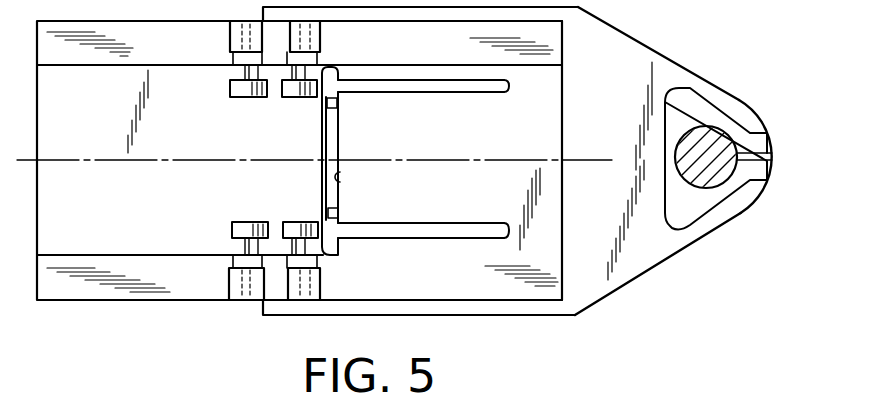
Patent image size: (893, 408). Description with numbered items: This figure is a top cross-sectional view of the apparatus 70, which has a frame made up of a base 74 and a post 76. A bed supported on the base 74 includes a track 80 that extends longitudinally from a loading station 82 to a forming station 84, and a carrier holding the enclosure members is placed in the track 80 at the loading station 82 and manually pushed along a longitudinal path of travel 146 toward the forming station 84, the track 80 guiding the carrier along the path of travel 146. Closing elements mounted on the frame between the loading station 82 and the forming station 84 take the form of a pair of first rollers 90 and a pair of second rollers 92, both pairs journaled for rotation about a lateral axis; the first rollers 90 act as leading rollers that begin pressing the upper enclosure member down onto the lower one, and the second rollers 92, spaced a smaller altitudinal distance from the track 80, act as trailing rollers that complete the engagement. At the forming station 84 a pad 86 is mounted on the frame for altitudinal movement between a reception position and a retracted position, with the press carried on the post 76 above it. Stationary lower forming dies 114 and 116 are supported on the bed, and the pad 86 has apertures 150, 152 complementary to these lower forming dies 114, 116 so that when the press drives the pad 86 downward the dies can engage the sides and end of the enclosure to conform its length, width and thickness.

The apparatus 70 is at (738, 226).
The base 74 is at (648, 250).
The post 76 is at (714, 137).
The track 80 is at (107, 255).
The loading station 82 is at (299, 90).
The forming station 84 is at (387, 161).
The pad 86 is at (550, 105).
The first rollers 90 is at (230, 88).
The second rollers 92 is at (294, 97).
The lower forming dies 114 is at (489, 92).
The lower forming dies 116 is at (338, 103).
The path of travel 146 is at (457, 161).
The apertures 150 is at (378, 85).
The apertures 152 is at (343, 178).